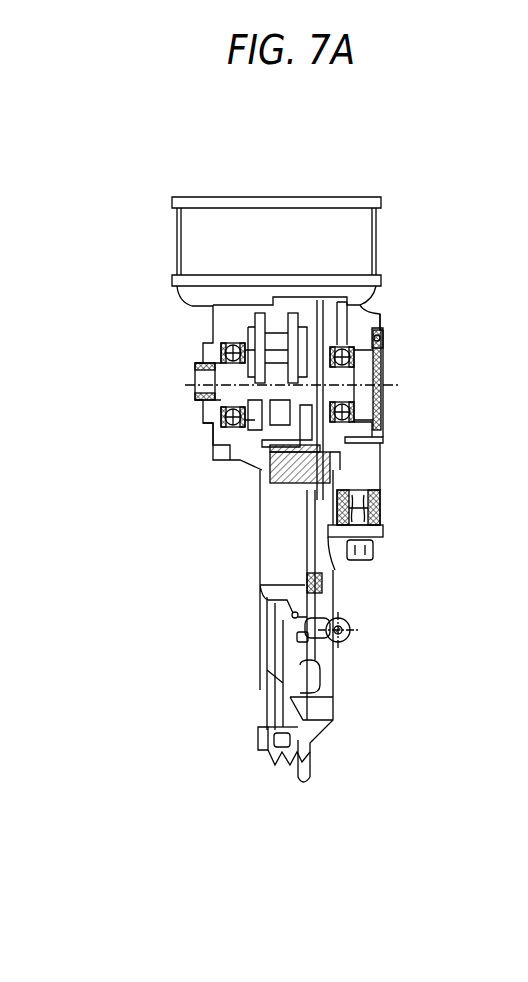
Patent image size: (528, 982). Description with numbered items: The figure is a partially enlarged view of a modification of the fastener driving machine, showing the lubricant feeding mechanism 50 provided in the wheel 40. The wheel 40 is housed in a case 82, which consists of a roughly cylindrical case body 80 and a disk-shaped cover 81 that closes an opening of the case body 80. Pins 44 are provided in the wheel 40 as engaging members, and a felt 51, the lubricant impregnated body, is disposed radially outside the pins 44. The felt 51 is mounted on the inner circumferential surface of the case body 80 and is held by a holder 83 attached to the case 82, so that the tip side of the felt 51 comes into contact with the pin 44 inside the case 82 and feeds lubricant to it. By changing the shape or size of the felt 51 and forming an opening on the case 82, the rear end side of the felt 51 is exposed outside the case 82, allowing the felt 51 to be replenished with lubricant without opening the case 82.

The case body 80 is at (265, 303).
The wheel 40 is at (320, 328).
The cover 81 is at (383, 338).
The pin 44 is at (383, 443).
The holder 83 is at (373, 495).
The lubricant feeding mechanism 50 is at (378, 538).
The felt 51 is at (215, 437).
The case 82 is at (228, 477).